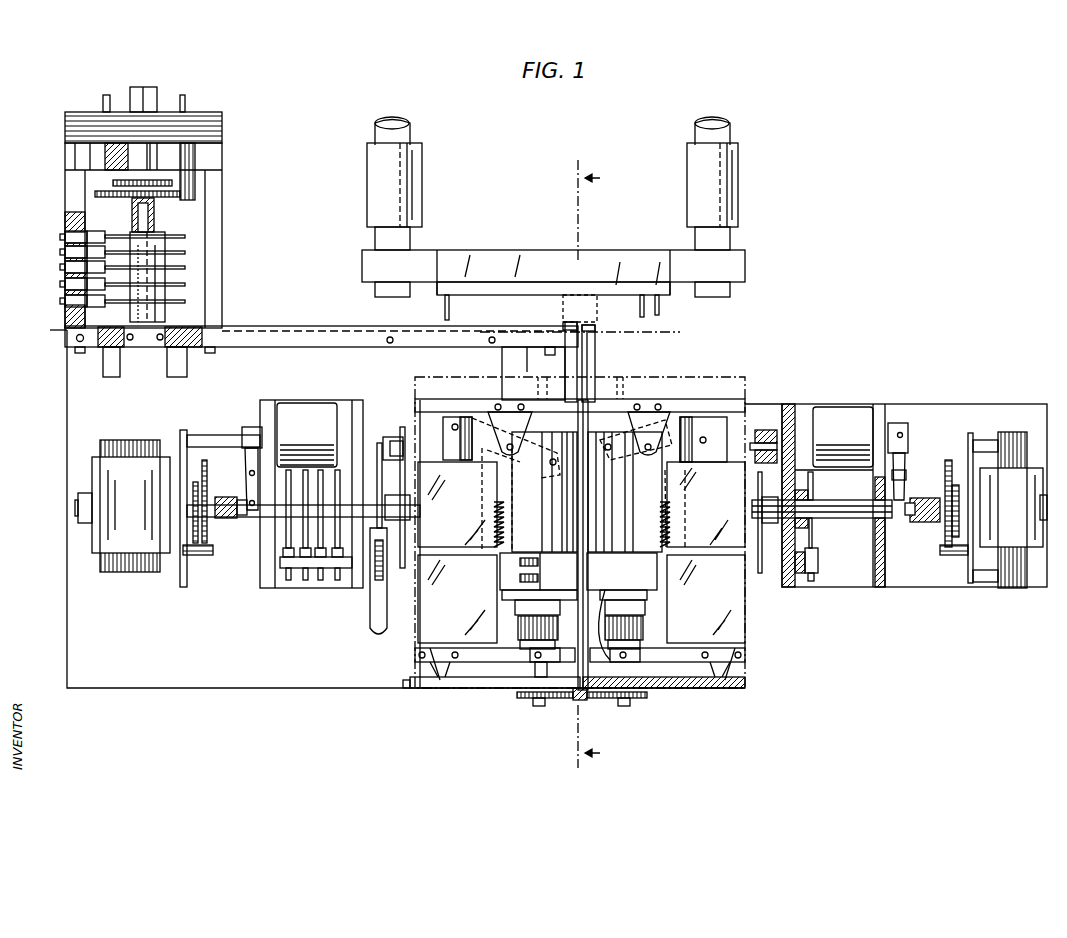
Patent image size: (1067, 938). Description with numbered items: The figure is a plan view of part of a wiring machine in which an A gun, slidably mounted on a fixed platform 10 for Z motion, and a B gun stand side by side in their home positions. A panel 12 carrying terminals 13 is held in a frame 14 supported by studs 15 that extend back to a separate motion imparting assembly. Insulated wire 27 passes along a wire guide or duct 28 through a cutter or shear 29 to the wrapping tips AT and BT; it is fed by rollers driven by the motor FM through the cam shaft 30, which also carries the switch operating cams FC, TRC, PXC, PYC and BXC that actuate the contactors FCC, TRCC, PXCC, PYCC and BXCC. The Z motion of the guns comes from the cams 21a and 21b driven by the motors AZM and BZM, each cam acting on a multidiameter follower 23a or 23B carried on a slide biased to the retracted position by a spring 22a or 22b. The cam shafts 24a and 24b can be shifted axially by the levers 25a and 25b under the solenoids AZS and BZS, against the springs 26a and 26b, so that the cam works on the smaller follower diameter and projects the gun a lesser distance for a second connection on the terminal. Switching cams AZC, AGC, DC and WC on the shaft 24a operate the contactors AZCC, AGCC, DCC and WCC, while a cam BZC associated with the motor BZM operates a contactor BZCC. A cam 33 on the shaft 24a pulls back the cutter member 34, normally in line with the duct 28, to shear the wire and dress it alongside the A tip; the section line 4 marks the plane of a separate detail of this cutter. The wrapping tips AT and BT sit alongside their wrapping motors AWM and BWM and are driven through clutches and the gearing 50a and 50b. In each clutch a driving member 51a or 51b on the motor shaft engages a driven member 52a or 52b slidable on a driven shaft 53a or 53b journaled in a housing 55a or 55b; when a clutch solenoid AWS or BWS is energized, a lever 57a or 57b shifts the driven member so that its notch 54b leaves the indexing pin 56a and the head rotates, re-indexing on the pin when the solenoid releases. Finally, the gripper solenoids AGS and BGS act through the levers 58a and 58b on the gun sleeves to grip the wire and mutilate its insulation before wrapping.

The feed motor FM is at (222, 130).
The switch operating cam FC is at (185, 236).
The cam shaft 30 is at (155, 228).
The switch operating cam TRC is at (185, 252).
The switch operating cam PXC is at (185, 267).
The switch operating cam PYC is at (185, 284).
The switch operating cam BXC is at (185, 301).
The switching contactor FCC is at (60, 236).
The switching contactor TRCC is at (60, 252).
The switching contactor PXCC is at (60, 267).
The switching contactor PYCC is at (60, 284).
The switching contactor BXCC is at (60, 301).
The insulated wire 27 is at (60, 332).
The wire guide or duct 28 is at (305, 326).
The fixed platform 10 is at (233, 682).
The studs 15 is at (410, 135).
The frame 14 is at (745, 268).
The section line 4 is at (595, 464).
The panel 12 is at (645, 303).
The terminals 13 is at (660, 320).
The wire cutter or shear 29 is at (541, 320).
The cutter member 34 is at (553, 355).
The wrapping tip of A gun AT is at (577, 325).
The wrapping tip of B gun BT is at (595, 350).
The lever 58a is at (525, 470).
The lever 58b is at (615, 465).
The cam 21a is at (428, 472).
The cam 21b is at (760, 578).
The gripper solenoid AGS is at (457, 504).
The gripper solenoid BGS is at (706, 482).
The spring 22a is at (488, 524).
The spring 22b is at (675, 525).
The wrapping motor AWM is at (544, 492).
The wrapping motor BWM is at (625, 492).
The clutch solenoid AWS is at (457, 599).
The clutch solenoid BWS is at (706, 599).
The driving clutch member 51a is at (518, 627).
The driving clutch member 51b is at (645, 625).
The notch 54b is at (612, 616).
The lever 57a is at (470, 662).
The lever 57b is at (706, 662).
The housing 55a is at (468, 680).
The housing 55b is at (690, 690).
The driven clutch member 52a is at (528, 662).
The driven clutch member 52b is at (640, 662).
The homing or indexing pin 56a is at (535, 670).
The gearing 50a is at (555, 700).
The gearing 50b is at (603, 700).
The driven shaft 53a is at (538, 706).
The driven shaft 53b is at (625, 706).
The A Z motor AZM is at (127, 572).
The solenoid AZS is at (307, 435).
The lever 25a is at (245, 450).
The spring 26a is at (225, 497).
The switching cam AZC is at (290, 522).
The switching cam AGC is at (306, 532).
The switching cam DC is at (322, 542).
The switching cam WC is at (338, 475).
The contactor AZCC is at (289, 582).
The contactor AGCC is at (305, 582).
The contactor DCC is at (320, 582).
The contactor WCC is at (337, 582).
The cam 33 is at (377, 445).
The cam shaft 24a is at (402, 530).
The multidiameter follower 23a is at (396, 437).
The solenoid BZS is at (834, 438).
The cam shaft 24b is at (825, 518).
The switching cam BZC is at (813, 488).
The contactor BZCC is at (811, 581).
The multidiameter follower 23B is at (765, 430).
The lever 25b is at (905, 461).
The spring 26b is at (922, 522).
The B Z motor BZM is at (1015, 588).